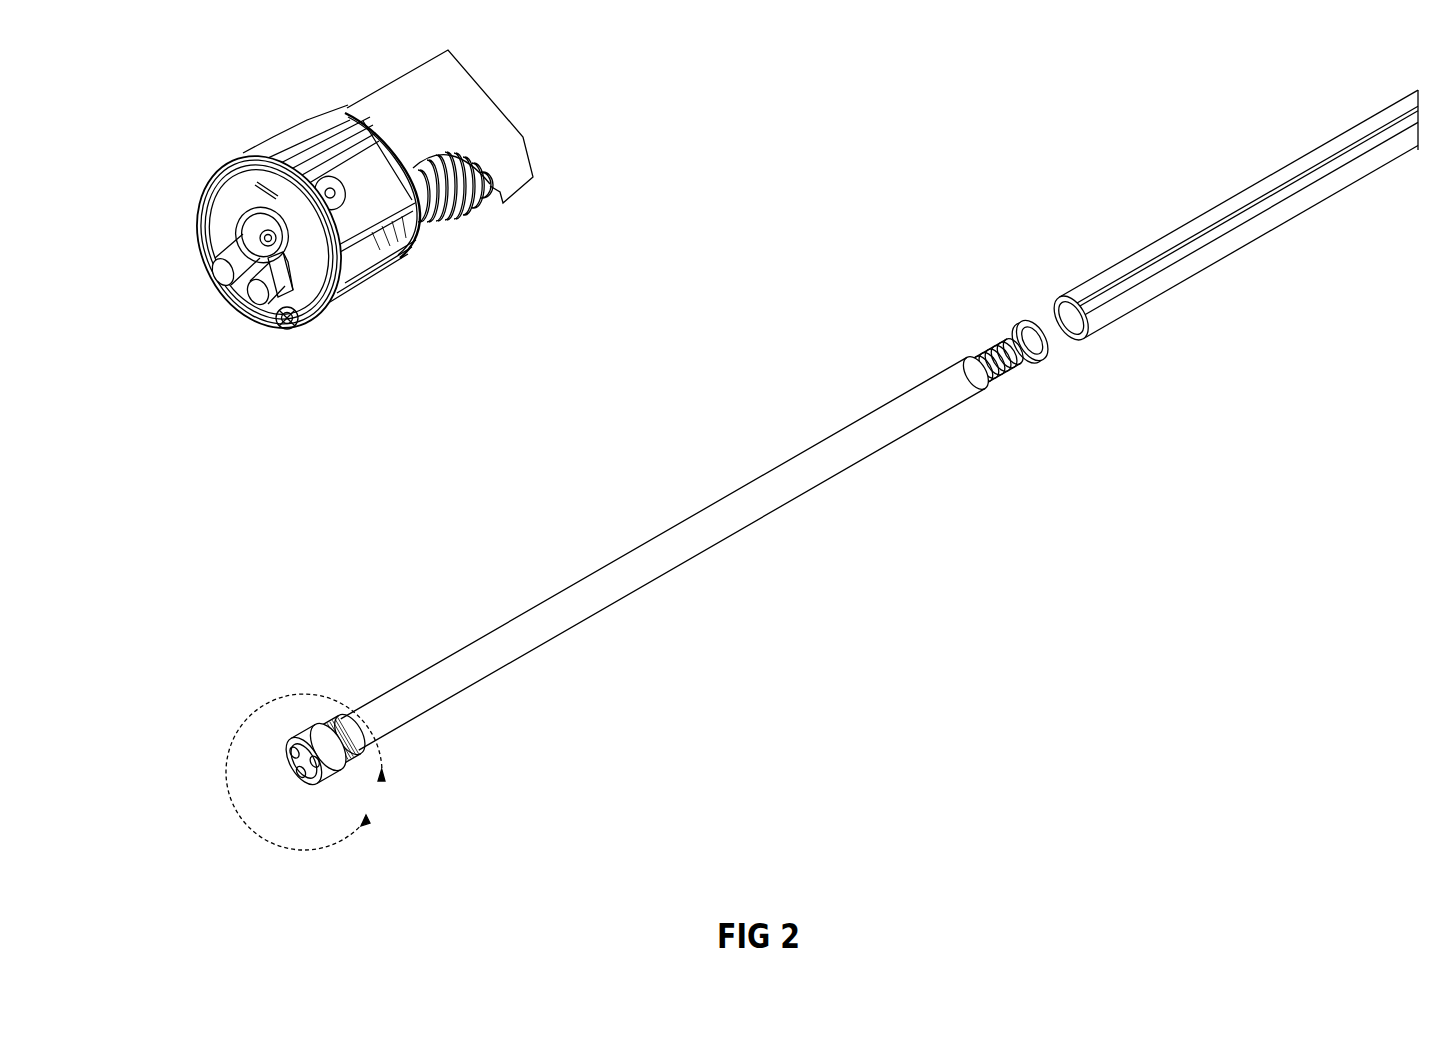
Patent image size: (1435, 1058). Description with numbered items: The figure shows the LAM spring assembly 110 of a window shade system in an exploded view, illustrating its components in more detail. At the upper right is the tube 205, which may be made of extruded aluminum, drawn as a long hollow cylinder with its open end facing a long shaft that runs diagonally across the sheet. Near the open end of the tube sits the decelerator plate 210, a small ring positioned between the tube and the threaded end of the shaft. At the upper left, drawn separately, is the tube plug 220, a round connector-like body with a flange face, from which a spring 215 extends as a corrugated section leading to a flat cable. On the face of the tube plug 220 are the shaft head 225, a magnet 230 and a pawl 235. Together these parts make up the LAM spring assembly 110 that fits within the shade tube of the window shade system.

The LAM spring assembly 110 is at (754, 203).
The tube 205 is at (1240, 197).
The decelerator plate 210 is at (1018, 325).
The spring 215 is at (452, 208).
The tube plug 220 is at (205, 192).
The shaft head 225 is at (217, 253).
The magnet 230 is at (283, 328).
The pawl 235 is at (288, 283).